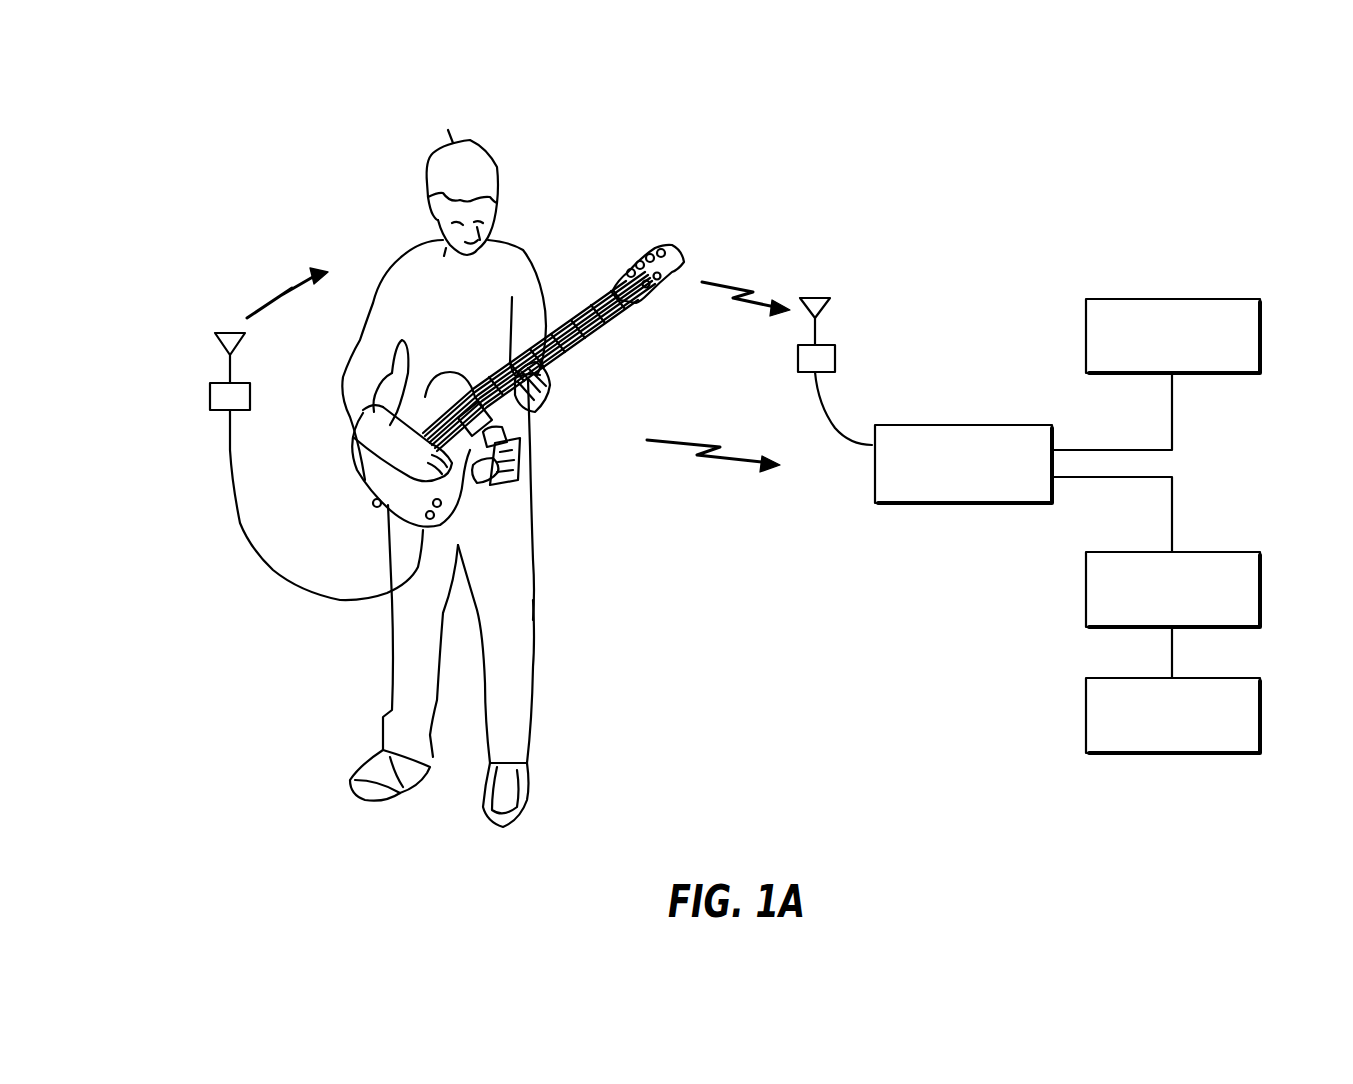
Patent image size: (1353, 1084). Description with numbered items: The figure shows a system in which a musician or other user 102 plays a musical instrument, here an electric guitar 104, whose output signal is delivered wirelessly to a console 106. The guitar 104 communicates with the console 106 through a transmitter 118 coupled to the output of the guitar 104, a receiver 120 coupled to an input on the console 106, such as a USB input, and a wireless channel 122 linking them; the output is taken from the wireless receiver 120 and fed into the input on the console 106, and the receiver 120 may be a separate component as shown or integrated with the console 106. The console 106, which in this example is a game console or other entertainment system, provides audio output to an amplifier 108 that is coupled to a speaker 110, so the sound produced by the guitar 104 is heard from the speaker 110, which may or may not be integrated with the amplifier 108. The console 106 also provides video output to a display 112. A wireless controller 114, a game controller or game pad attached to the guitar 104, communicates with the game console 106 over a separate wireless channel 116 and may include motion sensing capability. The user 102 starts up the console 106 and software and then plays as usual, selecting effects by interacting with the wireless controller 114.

The user 102 is at (452, 145).
The electric guitar 104 is at (676, 258).
The console 106 is at (990, 425).
The amplifier 108 is at (1205, 552).
The speaker 110 is at (1205, 678).
The display 112 is at (1205, 299).
The wireless controller 114 is at (522, 466).
The wireless channel 116 is at (675, 440).
The transmitter 118 is at (208, 395).
The receiver 120 is at (840, 360).
The wireless channel 122 is at (262, 290).